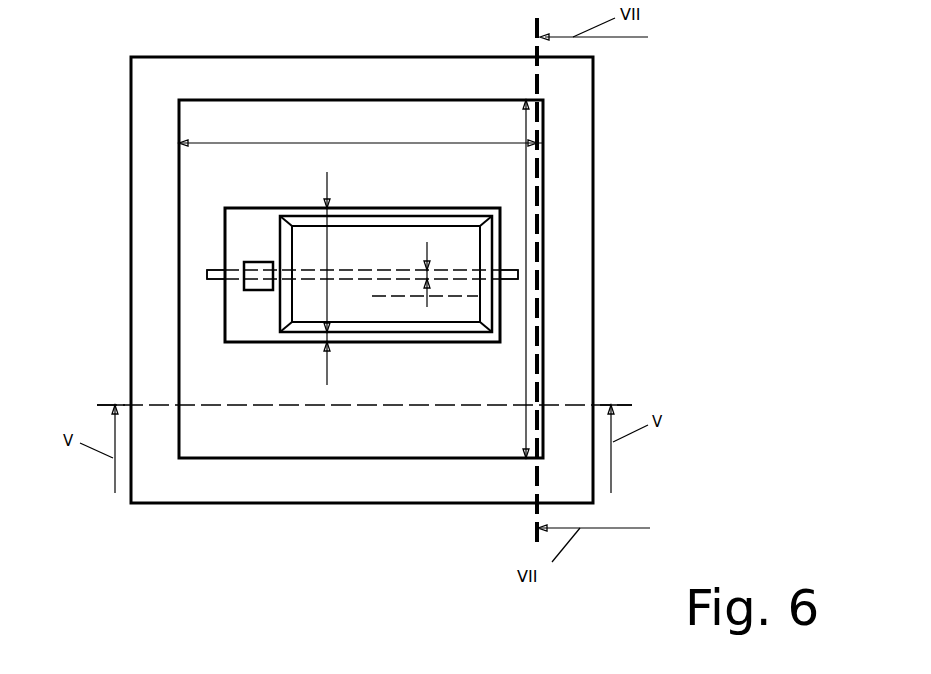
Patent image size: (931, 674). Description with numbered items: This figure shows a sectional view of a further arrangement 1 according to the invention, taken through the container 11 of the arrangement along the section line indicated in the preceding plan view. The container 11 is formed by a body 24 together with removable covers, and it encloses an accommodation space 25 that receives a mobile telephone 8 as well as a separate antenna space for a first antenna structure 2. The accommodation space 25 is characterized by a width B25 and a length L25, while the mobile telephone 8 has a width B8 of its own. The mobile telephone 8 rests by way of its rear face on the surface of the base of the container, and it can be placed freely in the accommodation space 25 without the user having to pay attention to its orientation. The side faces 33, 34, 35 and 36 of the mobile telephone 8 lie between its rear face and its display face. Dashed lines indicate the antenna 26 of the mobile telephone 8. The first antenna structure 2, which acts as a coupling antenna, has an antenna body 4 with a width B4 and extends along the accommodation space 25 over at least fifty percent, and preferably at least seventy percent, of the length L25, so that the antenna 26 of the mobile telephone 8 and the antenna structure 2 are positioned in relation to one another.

The arrangement 1 is at (638, 98).
The container 11 is at (653, 218).
The body 24 is at (577, 260).
The accommodation space 25 is at (482, 437).
The length of the accommodation space L25 is at (471, 142).
The width of the accommodation space B25 is at (525, 176).
The side face 36 is at (293, 207).
The width of the mobile telephone B8 is at (327, 180).
The side face 33 is at (488, 342).
The side face 34 is at (502, 287).
The antenna 26 is at (373, 300).
The first antenna structure 2 is at (215, 277).
The antenna body 4 is at (177, 523).
The width of the antenna body B4 is at (427, 242).
The side face 35 is at (225, 260).
The mobile telephone 8 is at (253, 317).